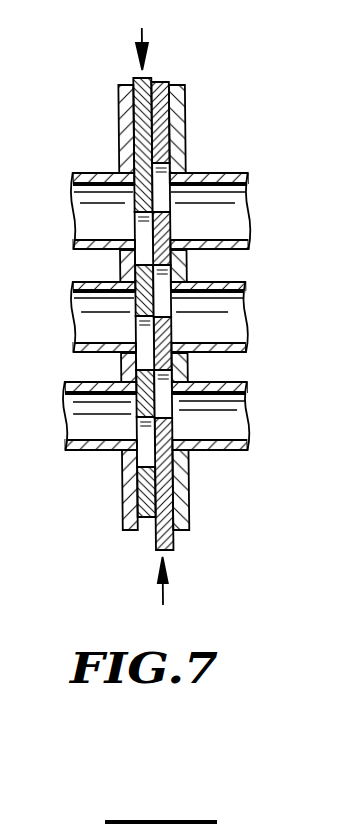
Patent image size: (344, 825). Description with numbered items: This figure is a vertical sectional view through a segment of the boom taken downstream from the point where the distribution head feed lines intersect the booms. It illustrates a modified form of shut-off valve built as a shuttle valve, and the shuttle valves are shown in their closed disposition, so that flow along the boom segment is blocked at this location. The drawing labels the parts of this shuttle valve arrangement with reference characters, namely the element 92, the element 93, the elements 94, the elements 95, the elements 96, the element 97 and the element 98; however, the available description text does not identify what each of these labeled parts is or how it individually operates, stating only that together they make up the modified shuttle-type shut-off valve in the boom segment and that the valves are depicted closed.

The rotatable valve shaft 92 is at (146, 75).
The fixed sleeve 93 is at (159, 85).
The first pair of registrable ports 94 is at (163, 190).
The second pair of registrable ports 95 is at (162, 292).
The third pair of registrable ports 96 is at (161, 402).
The inlet flow direction arrow 97 is at (142, 37).
The outlet flow direction arrow 98 is at (160, 592).